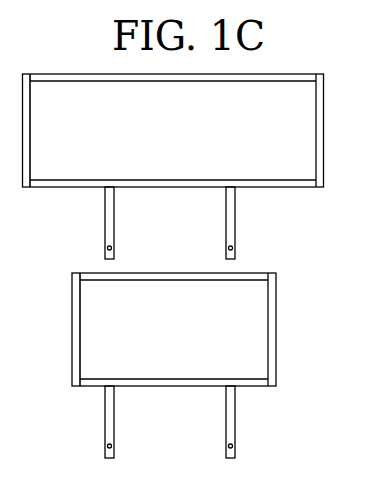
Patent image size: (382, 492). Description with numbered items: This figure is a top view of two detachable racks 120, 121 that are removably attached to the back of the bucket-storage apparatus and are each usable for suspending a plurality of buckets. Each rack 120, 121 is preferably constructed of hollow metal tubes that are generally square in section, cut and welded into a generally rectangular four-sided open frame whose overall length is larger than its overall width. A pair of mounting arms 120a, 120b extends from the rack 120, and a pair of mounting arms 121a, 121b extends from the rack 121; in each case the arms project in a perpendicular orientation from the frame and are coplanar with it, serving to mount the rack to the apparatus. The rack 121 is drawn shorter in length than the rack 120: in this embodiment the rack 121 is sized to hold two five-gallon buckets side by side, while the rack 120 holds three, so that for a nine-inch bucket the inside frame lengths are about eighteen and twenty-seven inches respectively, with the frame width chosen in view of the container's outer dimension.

The rack 120 is at (324, 141).
The mounting arm 120a is at (114, 239).
The mounting arm 120b is at (236, 235).
The rack 121 is at (277, 335).
The mounting arm 121a is at (114, 437).
The mounting arm 121b is at (236, 438).